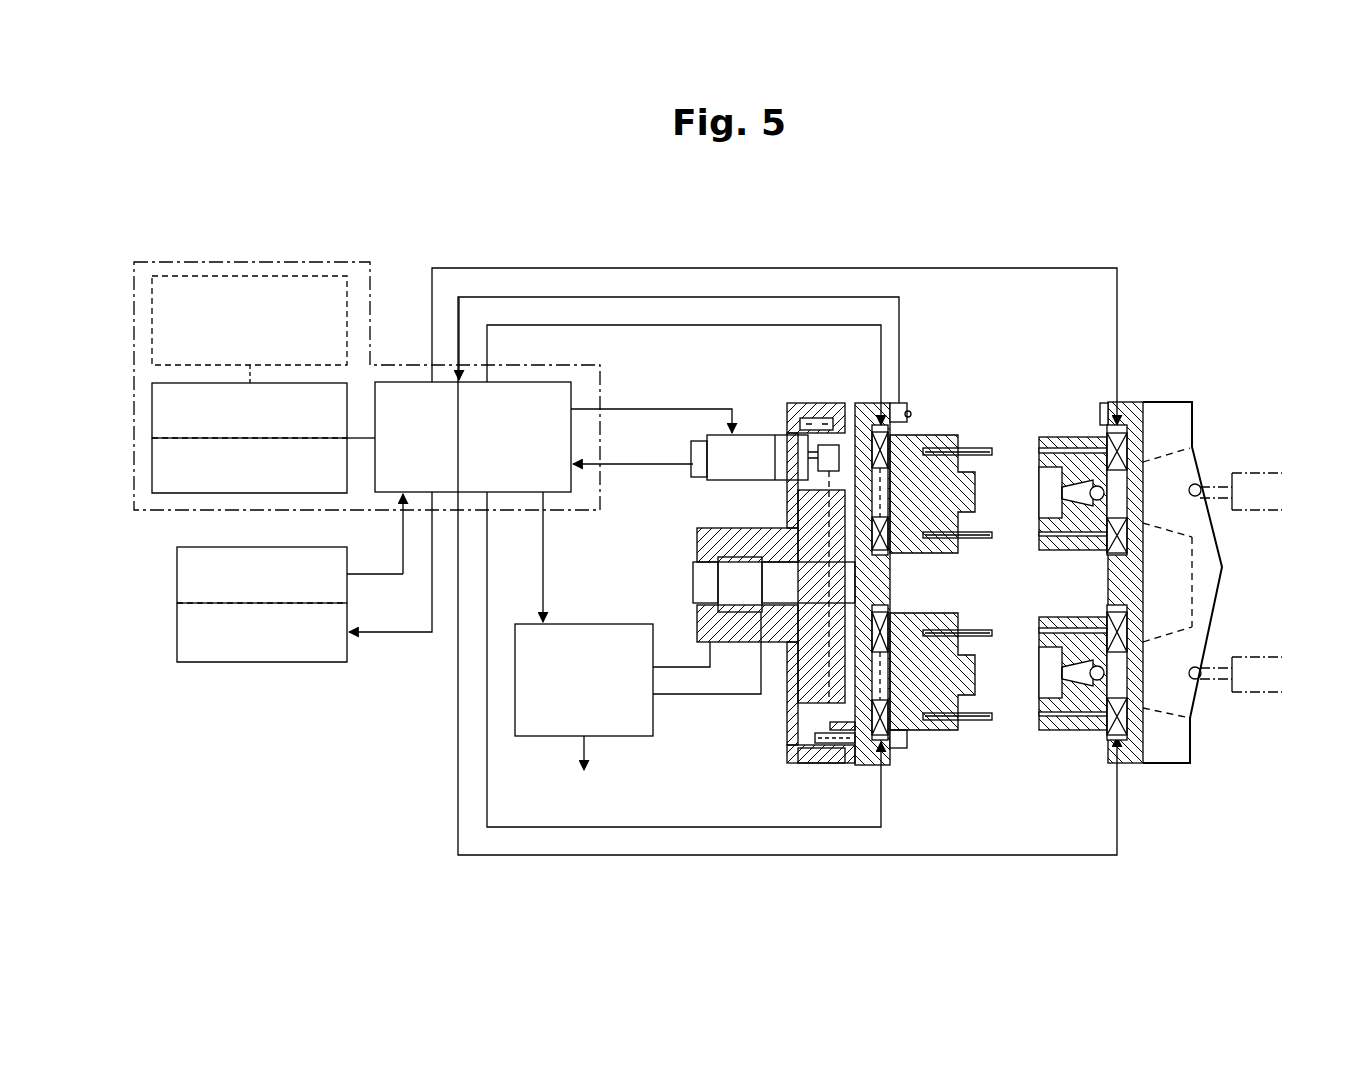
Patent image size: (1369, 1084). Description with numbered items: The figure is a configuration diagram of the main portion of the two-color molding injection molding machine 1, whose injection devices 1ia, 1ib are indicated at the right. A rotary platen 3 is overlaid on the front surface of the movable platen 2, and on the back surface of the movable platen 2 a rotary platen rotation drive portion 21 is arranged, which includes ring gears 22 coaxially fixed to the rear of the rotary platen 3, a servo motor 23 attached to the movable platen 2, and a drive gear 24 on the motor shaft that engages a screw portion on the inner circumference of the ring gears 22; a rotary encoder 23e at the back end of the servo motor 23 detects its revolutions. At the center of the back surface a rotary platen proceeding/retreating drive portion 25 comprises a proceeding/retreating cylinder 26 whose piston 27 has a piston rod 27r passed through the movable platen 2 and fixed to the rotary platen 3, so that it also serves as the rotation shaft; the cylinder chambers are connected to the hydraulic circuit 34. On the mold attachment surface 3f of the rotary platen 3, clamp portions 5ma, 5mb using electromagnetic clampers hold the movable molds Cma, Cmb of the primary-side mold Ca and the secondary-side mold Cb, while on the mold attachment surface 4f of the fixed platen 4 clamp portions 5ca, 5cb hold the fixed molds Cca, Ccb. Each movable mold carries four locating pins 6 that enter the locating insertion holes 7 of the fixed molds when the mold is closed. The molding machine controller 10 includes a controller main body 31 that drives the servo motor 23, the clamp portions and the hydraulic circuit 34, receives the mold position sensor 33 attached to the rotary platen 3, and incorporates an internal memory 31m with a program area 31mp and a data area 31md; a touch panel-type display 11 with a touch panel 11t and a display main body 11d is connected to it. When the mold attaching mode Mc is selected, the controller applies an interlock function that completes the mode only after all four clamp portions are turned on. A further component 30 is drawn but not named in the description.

The two-color molding injection molding machine 1 is at (1235, 527).
The injection device 1ia is at (1268, 455).
The injection device 1ib is at (1262, 707).
The movable platen 2 is at (787, 749).
The rotary platen 3 is at (880, 609).
The mold attachment surface 3f is at (888, 590).
The fixed platen 4 is at (1182, 587).
The mold attachment surface 4f is at (1108, 757).
The clamp portion 5ma is at (872, 410).
The clamp portion 5mb is at (905, 749).
The clamp portion 5ca is at (1143, 553).
The clamp portion 5cb is at (1150, 760).
The locating pins 6 is at (967, 448).
The locating insertion holes 7 is at (1068, 437).
The molding machine controller 10 is at (228, 694).
The touch panel-type display 11 is at (228, 648).
The touch panel 11t is at (177, 566).
The display main body 11d is at (305, 667).
The rotary platen rotation drive portion 21 is at (748, 410).
The ring gears 22 is at (787, 713).
The servo motor 23 is at (772, 432).
The rotary encoder 23e is at (691, 458).
The drive gear 24 is at (790, 492).
The rotary platen proceeding/retreating drive portion 25 is at (690, 571).
The proceeding/retreating cylinder 26 is at (697, 535).
The piston 27 is at (738, 620).
The piston rod 27r is at (882, 560).
The controller 30 is at (398, 655).
The controller main body 31 is at (412, 382).
The internal memory 31m is at (151, 380).
The program area 31mp is at (152, 415).
The data area 31md is at (233, 494).
The mold position sensor 33 is at (889, 566).
The hydraulic circuit 34 is at (548, 737).
The mold on the primary side Ca is at (1057, 421).
The mold on the secondary side Cb is at (1054, 726).
The movable mold on the primary side Cma is at (936, 435).
The movable mold on the secondary side Cmb is at (950, 732).
The fixed mold on the primary side Cca is at (1040, 437).
The fixed mold on the secondary side Ccb is at (1082, 733).
The mold attaching mode Mc is at (270, 276).